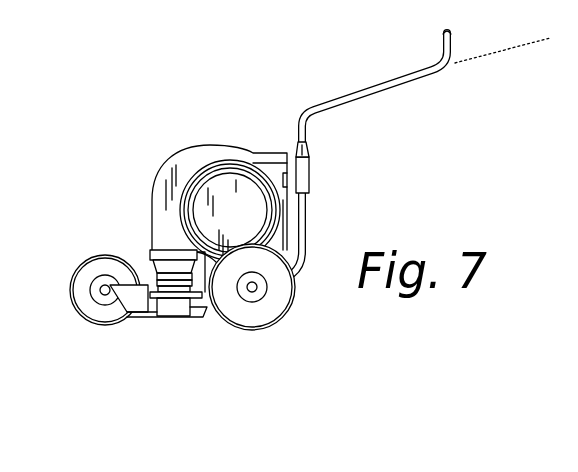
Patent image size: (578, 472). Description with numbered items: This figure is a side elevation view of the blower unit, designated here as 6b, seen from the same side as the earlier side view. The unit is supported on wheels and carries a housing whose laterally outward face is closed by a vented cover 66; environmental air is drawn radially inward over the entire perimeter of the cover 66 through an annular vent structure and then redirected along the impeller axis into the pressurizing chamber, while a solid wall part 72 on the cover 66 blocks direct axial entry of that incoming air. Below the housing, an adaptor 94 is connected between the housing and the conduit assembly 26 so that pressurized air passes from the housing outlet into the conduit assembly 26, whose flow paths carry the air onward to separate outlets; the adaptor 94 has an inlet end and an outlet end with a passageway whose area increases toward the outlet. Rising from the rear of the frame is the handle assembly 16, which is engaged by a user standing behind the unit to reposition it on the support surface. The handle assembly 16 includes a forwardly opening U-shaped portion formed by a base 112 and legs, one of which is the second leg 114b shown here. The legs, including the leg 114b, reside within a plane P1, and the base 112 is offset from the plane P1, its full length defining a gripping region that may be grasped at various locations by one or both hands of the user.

The blower/vacuum apparatus 6b is at (276, 192).
The handle assembly 16 is at (384, 144).
The conduit assembly 26 is at (168, 336).
The vented cover 66 is at (247, 197).
The solid wall part 72 is at (219, 197).
The adaptor 94 is at (150, 252).
The base 112 is at (444, 26).
The second leg 114b is at (392, 93).
The plane P1 is at (527, 47).